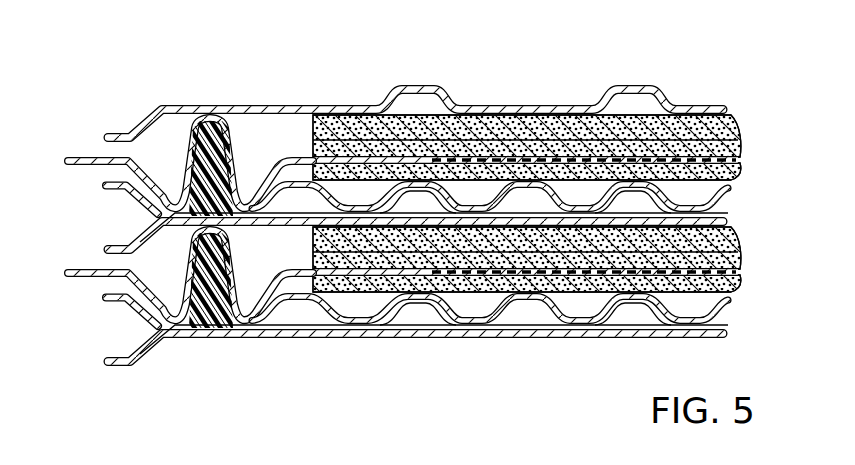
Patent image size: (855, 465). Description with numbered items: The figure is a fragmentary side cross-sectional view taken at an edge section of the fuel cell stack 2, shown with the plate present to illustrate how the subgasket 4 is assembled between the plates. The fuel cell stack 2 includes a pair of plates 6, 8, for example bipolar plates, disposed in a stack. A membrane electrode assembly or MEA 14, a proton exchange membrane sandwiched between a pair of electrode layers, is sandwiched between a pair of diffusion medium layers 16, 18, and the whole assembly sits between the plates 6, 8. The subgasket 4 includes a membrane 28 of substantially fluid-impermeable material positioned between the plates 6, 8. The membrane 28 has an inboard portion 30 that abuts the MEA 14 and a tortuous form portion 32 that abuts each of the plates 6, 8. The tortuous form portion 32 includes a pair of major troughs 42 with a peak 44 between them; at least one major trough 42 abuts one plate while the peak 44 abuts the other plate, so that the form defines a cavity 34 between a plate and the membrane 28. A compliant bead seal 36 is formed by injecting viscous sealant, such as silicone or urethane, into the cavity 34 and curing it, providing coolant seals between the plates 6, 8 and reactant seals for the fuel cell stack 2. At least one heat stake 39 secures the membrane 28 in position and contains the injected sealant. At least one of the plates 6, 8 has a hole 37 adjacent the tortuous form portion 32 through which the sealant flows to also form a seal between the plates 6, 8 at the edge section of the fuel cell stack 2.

The fuel cell stack 2 is at (658, 56).
The subgasket 4 is at (168, 191).
The membrane 28 is at (68, 158).
The plate 6 is at (730, 104).
The plate 8 is at (722, 198).
The membrane electrode assembly 14 is at (746, 160).
The diffusion medium layer 16 is at (743, 150).
The diffusion medium layer 18 is at (744, 167).
The inboard portion 30 is at (543, 148).
The tortuous form portion 32 is at (206, 193).
The cavity 34 is at (214, 128).
The compliant bead seal 36 is at (190, 178).
The hole 37 is at (143, 259).
The heat stake 39 is at (140, 236).
The major trough 42 is at (157, 181).
The peak 44 is at (199, 103).